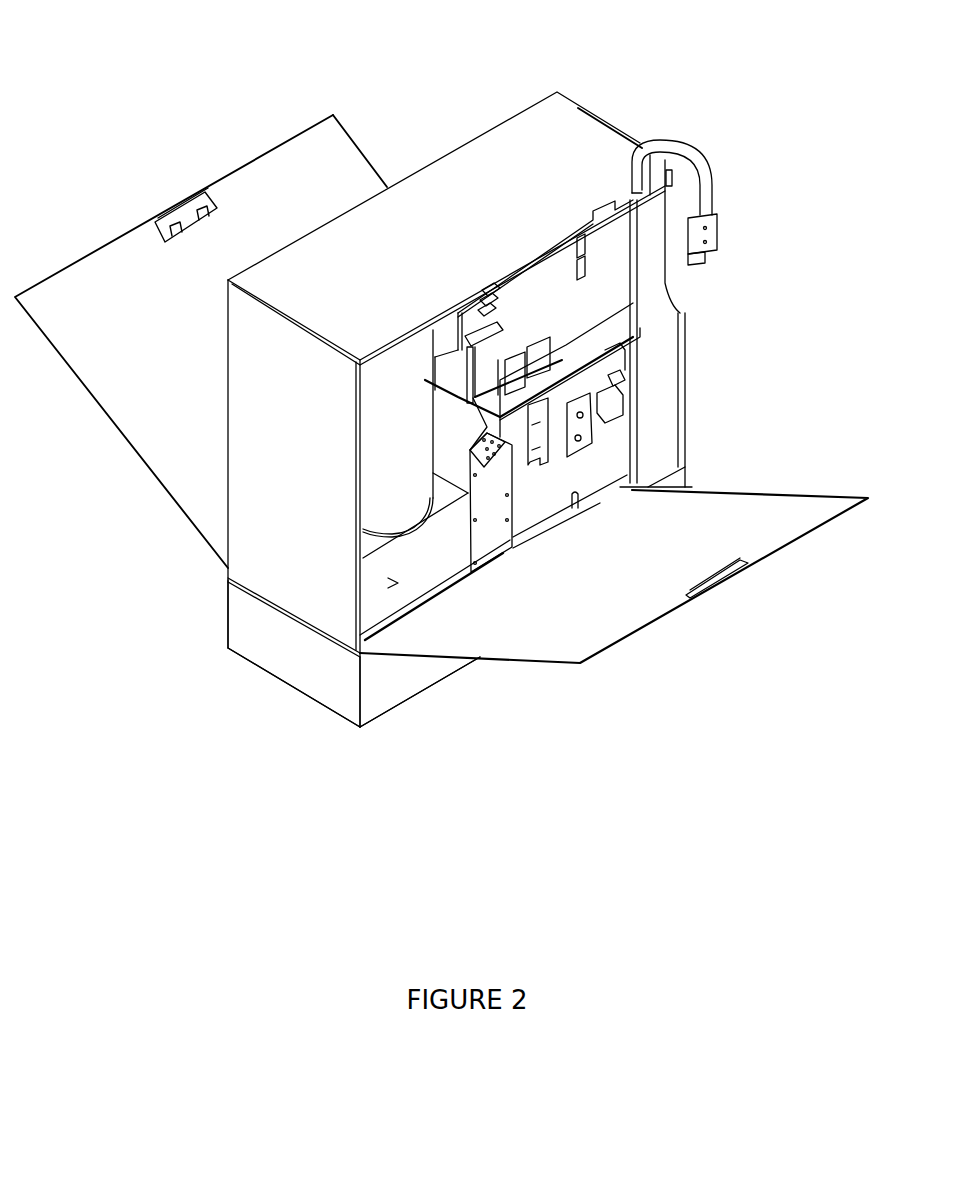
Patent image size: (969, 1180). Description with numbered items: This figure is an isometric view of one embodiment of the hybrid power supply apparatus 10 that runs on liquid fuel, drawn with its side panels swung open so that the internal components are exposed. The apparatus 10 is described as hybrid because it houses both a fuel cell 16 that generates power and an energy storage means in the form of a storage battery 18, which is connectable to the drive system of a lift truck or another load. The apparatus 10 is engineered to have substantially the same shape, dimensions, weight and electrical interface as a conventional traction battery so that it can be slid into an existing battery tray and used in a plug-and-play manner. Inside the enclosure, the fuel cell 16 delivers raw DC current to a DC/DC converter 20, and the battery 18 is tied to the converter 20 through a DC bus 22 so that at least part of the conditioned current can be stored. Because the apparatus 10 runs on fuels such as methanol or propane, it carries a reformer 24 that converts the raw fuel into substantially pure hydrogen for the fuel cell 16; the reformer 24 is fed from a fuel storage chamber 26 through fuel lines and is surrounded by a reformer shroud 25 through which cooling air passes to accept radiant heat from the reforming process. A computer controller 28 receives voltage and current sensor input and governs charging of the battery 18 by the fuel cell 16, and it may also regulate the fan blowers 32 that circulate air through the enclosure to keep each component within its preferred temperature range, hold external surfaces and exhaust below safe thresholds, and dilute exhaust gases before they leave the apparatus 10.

The hybrid power supply apparatus 10 is at (680, 105).
The fuel cell 16 is at (583, 313).
The storage battery 18 is at (542, 490).
The DC/DC converter 20 is at (497, 520).
The DC bus 22 is at (583, 427).
The reformer 24 is at (398, 583).
The reformer shroud 25 is at (385, 443).
The fuel storage chamber 26 is at (298, 653).
The computer controller 28 is at (548, 273).
The fan blower 32 is at (585, 437).